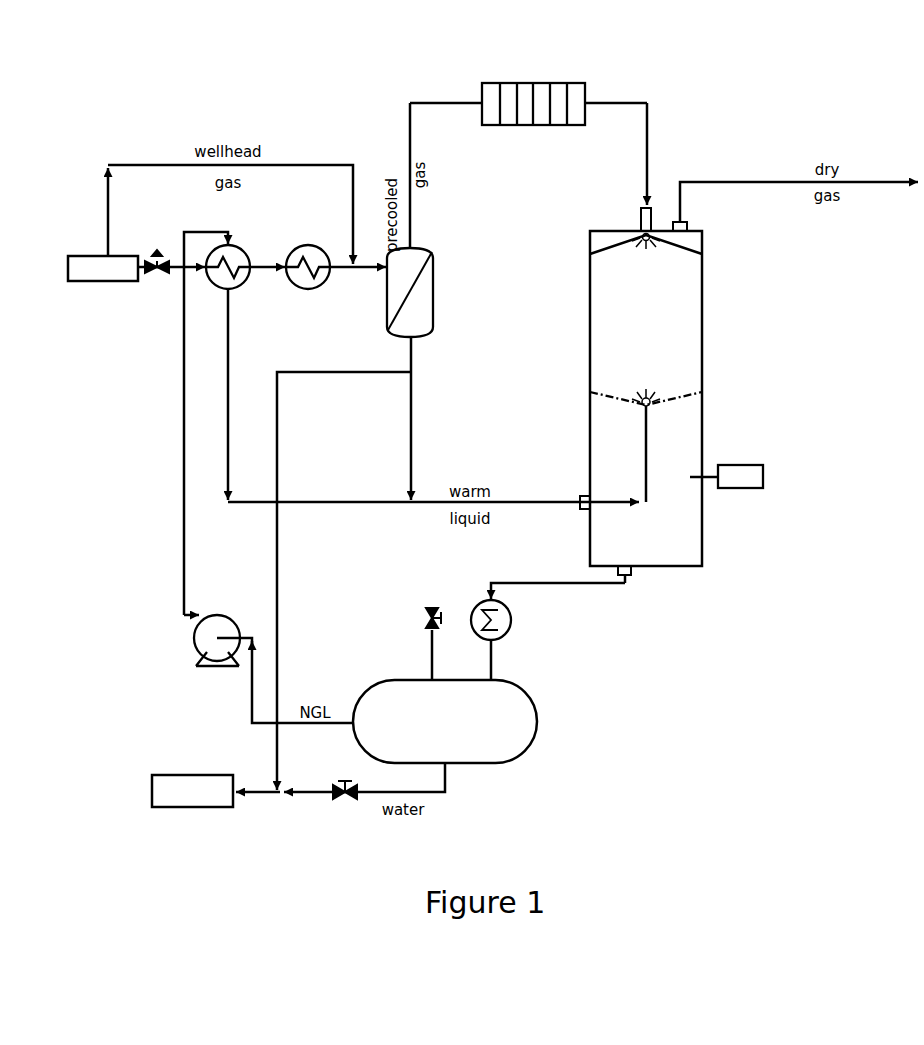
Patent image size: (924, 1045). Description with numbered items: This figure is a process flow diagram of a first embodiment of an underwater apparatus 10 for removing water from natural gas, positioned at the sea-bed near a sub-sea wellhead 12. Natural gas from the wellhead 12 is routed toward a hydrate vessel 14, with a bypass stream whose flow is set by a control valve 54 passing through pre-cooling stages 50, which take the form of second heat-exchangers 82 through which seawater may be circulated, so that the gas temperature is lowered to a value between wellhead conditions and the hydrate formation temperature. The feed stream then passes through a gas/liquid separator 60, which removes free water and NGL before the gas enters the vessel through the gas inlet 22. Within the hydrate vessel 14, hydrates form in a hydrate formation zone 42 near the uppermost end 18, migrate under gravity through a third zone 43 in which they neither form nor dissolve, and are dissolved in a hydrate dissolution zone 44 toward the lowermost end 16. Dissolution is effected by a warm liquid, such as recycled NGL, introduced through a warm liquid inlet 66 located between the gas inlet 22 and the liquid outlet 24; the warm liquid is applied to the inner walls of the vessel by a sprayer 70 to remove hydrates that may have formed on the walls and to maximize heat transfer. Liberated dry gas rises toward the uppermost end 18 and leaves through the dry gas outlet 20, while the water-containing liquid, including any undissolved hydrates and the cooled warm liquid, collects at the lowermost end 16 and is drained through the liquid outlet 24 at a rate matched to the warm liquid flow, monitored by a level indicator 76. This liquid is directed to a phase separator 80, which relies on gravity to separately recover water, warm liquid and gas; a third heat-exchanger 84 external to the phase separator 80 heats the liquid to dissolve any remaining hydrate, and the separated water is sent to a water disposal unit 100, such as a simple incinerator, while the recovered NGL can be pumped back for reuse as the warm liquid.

The apparatus 10 is at (736, 100).
The wellhead 12 is at (93, 282).
The hydrate vessel 14 is at (703, 295).
The lowermost end 16 is at (675, 550).
The uppermost end 18 is at (695, 241).
The dry gas outlet 20 is at (688, 222).
The gas inlet 22 is at (640, 215).
The liquid outlet 24 is at (632, 572).
The hydrate formation zone 42 is at (645, 275).
The third zone 43 is at (660, 355).
The hydrate dissolution zone 44 is at (635, 385).
The pre-cooling stage 50 is at (307, 243).
The control valve 54 is at (157, 248).
The gas/liquid separator 60 is at (433, 272).
The warm liquid inlet 66 is at (580, 497).
The sprayer 70 is at (675, 405).
The level indicator 76 is at (765, 473).
The phase separator 80 is at (540, 722).
The second heat-exchanger 82 is at (240, 288).
The third heat-exchanger 84 is at (512, 624).
The water disposal unit 100 is at (195, 807).